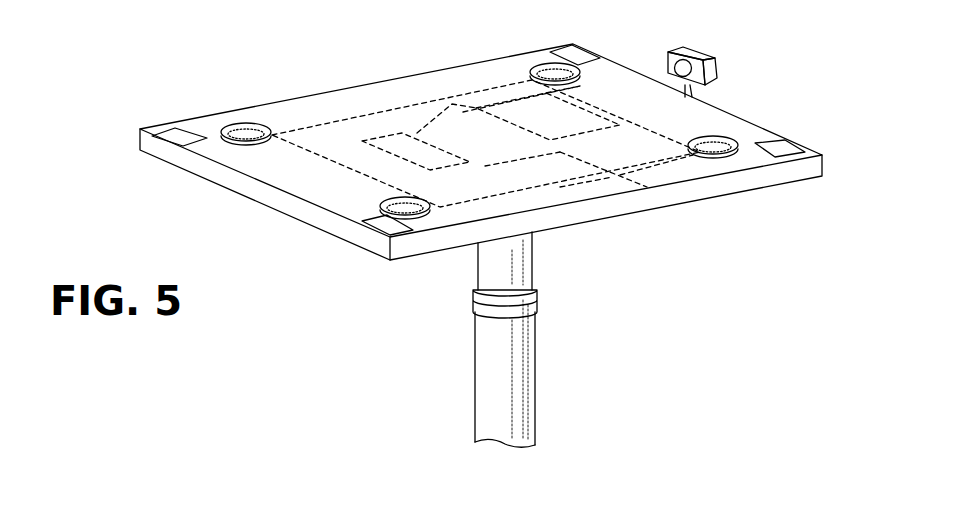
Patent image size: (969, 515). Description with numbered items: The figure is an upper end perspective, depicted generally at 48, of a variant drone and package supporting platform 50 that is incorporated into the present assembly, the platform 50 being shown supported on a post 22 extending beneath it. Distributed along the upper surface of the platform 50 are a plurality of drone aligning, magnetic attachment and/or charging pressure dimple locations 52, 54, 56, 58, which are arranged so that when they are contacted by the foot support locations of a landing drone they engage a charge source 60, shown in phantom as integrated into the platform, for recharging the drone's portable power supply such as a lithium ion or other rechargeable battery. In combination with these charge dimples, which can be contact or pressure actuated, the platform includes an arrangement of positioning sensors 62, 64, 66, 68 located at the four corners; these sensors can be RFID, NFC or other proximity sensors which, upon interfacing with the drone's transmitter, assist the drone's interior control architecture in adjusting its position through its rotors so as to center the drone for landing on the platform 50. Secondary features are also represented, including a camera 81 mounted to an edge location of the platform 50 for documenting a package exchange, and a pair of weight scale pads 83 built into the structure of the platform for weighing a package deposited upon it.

The support post 22 is at (532, 263).
The upper end perspective of the platform variant 48 is at (113, 90).
The drone and package supporting platform 50 is at (377, 92).
The dimple location 52 is at (243, 127).
The dimple location 54 is at (405, 203).
The dimple location 56 is at (547, 63).
The dimple location 58 is at (715, 137).
The charge source 60 is at (647, 190).
The positioning sensor 62 is at (153, 137).
The positioning sensor 64 is at (368, 223).
The positioning sensor 66 is at (587, 58).
The positioning sensor 68 is at (787, 143).
The camera 81 is at (693, 52).
The weight scale pads 83 is at (417, 133).